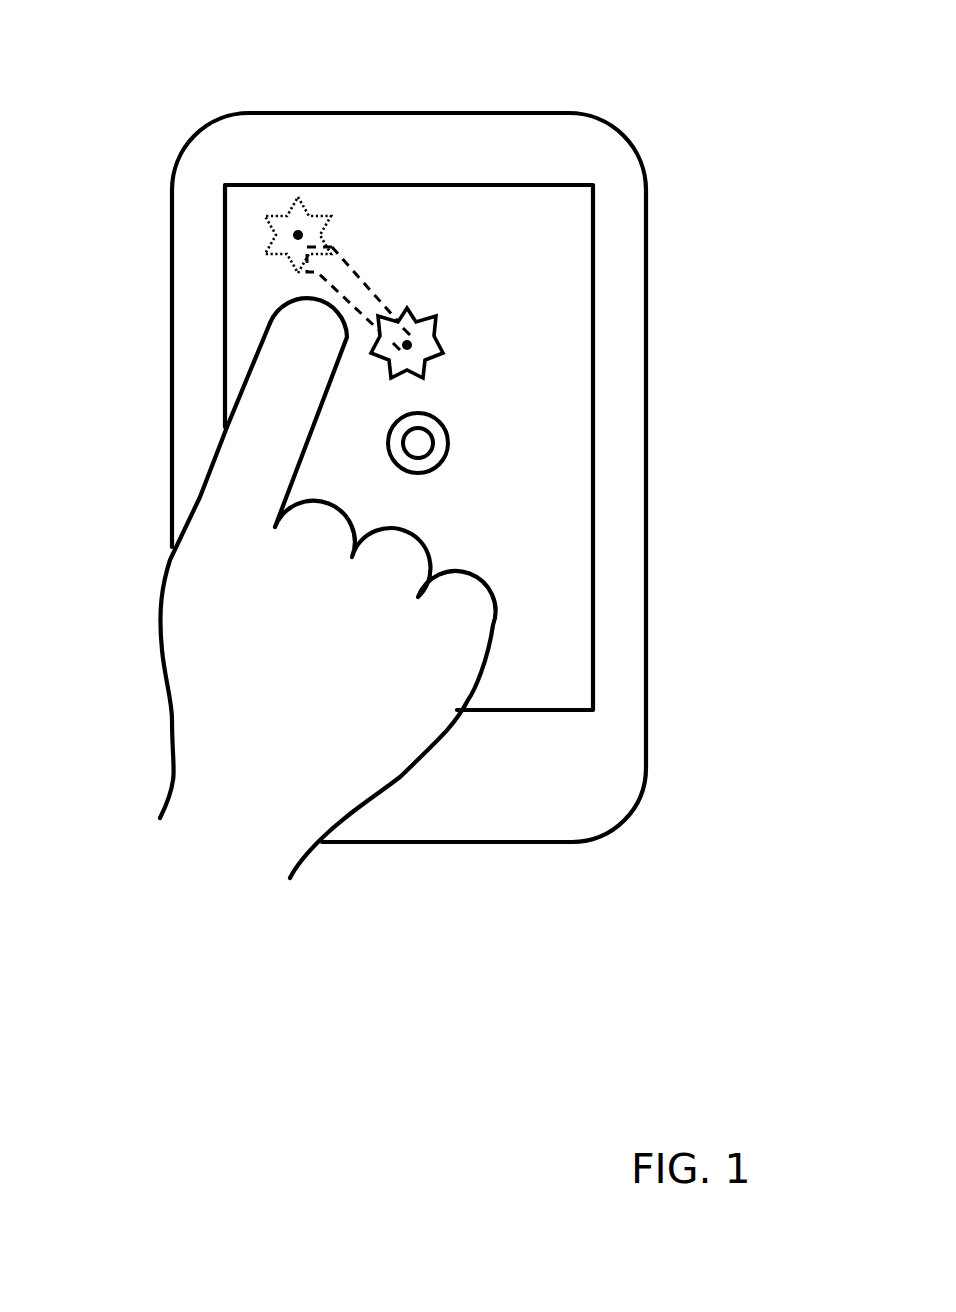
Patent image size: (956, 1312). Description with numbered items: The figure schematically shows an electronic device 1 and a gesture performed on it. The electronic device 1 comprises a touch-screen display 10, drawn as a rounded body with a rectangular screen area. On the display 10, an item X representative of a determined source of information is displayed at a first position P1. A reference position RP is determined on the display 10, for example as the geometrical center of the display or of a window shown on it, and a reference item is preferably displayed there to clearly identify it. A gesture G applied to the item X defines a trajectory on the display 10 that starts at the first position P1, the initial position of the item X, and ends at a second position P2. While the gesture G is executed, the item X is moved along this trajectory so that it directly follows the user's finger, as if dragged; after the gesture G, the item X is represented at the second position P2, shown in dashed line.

The electronic device 1 is at (153, 146).
The touch-screen display 10 is at (550, 515).
The first position P1 is at (410, 344).
The second position P2 is at (300, 232).
The gesture G is at (380, 305).
The item X is at (437, 322).
The reference position RP is at (420, 442).